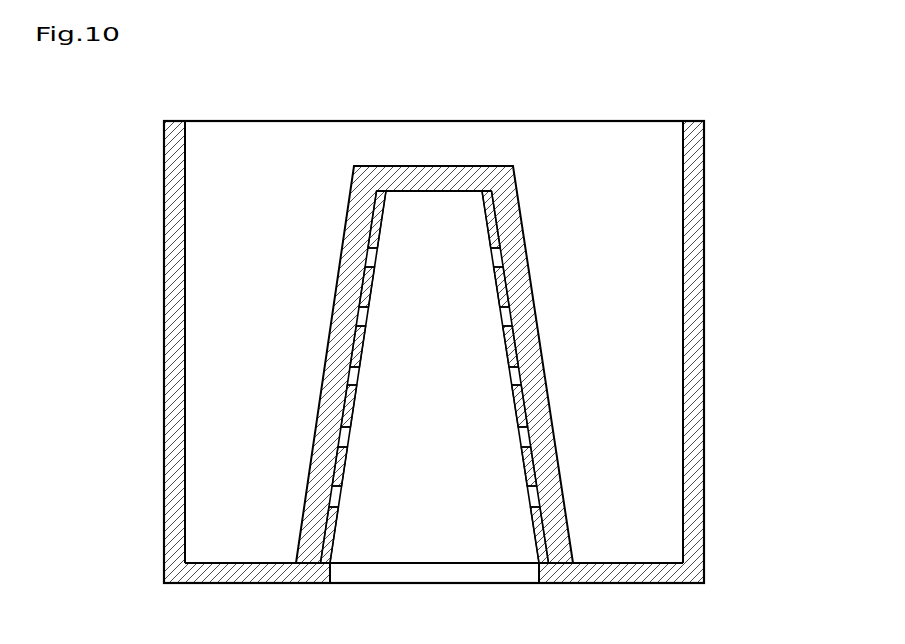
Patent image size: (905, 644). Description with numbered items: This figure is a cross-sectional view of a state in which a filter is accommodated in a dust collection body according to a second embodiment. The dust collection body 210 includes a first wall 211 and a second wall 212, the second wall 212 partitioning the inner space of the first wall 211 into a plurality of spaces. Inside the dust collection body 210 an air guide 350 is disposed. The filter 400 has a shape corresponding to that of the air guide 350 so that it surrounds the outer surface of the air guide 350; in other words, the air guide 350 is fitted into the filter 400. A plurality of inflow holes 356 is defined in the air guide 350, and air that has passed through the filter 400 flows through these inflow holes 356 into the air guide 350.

The dust collection body 210 is at (140, 437).
The first wall 211 is at (172, 190).
The second wall 212 is at (700, 275).
The filter 400 is at (438, 176).
The air guide 350 is at (490, 217).
The inflow holes 356 is at (528, 435).